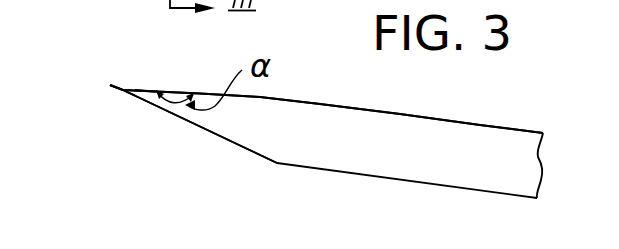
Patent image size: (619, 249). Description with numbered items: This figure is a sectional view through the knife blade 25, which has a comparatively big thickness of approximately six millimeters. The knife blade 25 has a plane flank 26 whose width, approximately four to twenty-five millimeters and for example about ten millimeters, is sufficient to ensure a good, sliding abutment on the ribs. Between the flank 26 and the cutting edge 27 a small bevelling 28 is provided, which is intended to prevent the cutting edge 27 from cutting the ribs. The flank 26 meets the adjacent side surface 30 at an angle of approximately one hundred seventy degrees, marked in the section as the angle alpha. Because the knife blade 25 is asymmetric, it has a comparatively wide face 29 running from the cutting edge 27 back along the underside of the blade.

The knife blade 25 is at (511, 118).
The plane flank 26 is at (145, 88).
The cutting edge 27 is at (123, 92).
The bevelling 28 is at (110, 85).
The face 29 is at (210, 131).
The side surface 30 is at (345, 107).